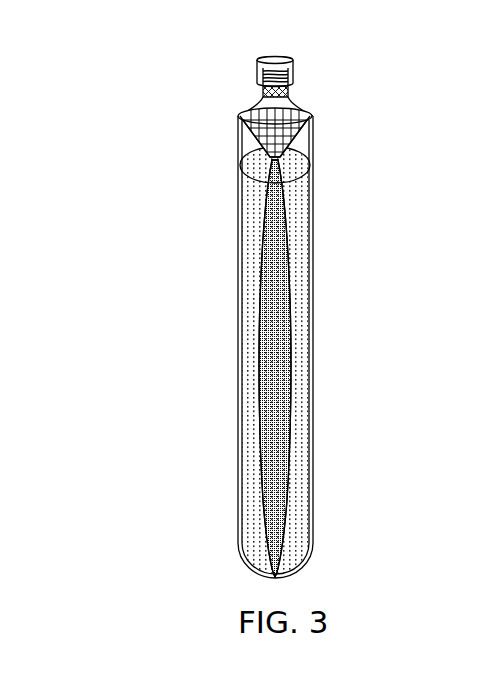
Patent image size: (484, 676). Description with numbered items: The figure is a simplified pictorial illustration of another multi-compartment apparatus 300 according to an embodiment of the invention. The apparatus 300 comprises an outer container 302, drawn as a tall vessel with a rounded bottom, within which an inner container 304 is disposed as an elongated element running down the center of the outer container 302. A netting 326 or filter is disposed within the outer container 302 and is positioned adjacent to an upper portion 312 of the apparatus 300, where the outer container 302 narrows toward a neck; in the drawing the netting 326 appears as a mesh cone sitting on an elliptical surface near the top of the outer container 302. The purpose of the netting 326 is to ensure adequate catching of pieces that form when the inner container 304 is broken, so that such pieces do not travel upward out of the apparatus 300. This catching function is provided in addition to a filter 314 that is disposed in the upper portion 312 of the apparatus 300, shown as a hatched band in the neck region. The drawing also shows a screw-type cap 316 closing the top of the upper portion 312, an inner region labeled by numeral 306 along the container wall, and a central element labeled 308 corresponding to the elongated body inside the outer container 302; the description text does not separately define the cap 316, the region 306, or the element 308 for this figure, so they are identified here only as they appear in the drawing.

The multi-compartment apparatus 300 is at (130, 52).
The outer container 302 is at (313, 268).
The inner container 304 is at (287, 228).
The inner wall layer 306 is at (308, 310).
The central insert 308 is at (286, 365).
The upper portion 312 is at (289, 97).
The filter 314 is at (263, 92).
The cap 316 is at (293, 68).
The netting 326 is at (297, 137).